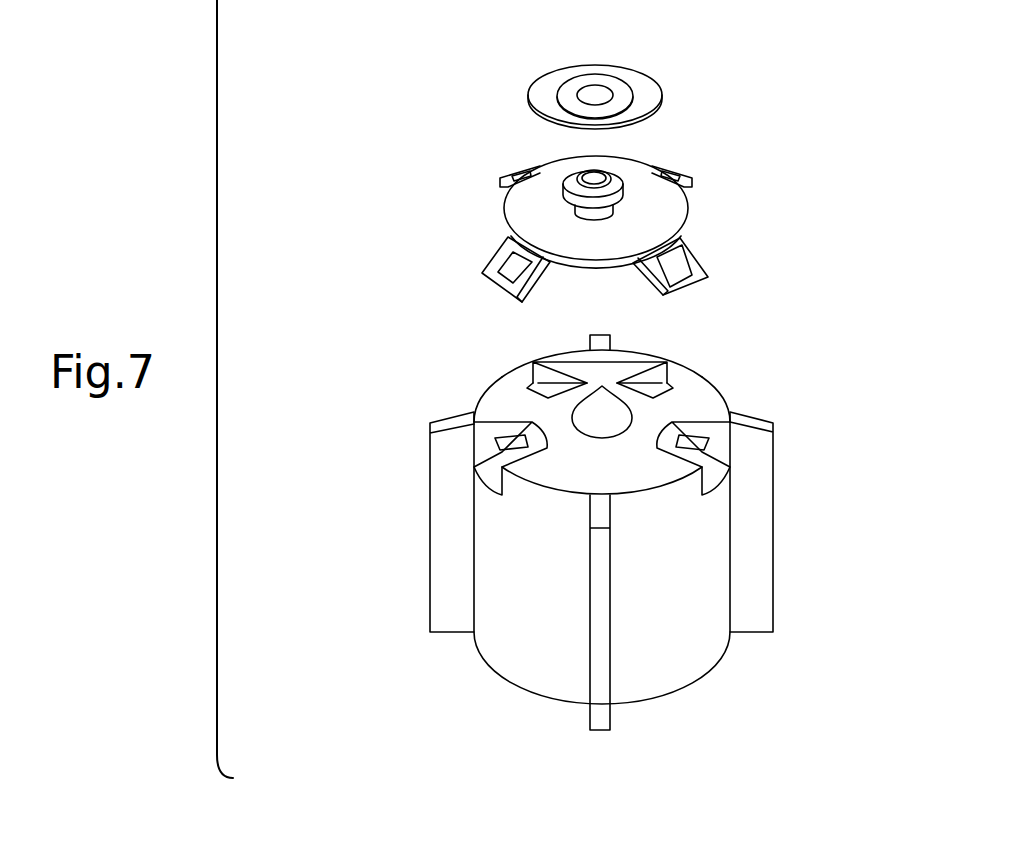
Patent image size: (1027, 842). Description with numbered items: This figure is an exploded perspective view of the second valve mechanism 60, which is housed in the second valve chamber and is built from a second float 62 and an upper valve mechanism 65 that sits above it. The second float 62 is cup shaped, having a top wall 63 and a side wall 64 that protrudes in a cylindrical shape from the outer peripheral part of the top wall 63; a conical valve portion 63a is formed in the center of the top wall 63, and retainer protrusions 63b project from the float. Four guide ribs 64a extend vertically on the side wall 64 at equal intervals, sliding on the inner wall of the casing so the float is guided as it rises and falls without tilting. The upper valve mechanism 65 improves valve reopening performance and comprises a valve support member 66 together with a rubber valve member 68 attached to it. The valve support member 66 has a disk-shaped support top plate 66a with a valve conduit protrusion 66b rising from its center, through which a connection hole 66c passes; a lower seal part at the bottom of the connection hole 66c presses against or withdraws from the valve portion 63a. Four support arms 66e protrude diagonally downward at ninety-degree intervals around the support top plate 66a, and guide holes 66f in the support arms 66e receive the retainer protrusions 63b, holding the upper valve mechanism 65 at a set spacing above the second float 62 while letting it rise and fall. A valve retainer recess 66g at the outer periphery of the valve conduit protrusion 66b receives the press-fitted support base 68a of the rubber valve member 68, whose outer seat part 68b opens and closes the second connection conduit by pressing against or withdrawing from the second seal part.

The second valve mechanism 60 is at (502, 69).
The second float 62 is at (770, 560).
The top wall 63 is at (698, 407).
The valve portion 63a is at (607, 412).
The retainer protrusions 63b is at (497, 448).
The side wall 64 is at (713, 517).
The guide ribs 64a is at (753, 612).
The upper valve mechanism 65 is at (850, 73).
The valve support member 66 is at (665, 229).
The support top plate 66a is at (685, 228).
The valve conduit protrusion 66b is at (573, 190).
The connection hole 66c is at (590, 176).
The support arms 66e is at (492, 261).
The guide holes 66f is at (497, 283).
The valve retainer recess 66g is at (593, 215).
The rubber valve member 68 is at (792, 48).
The support base 68a is at (620, 97).
The seat part 68b is at (650, 104).